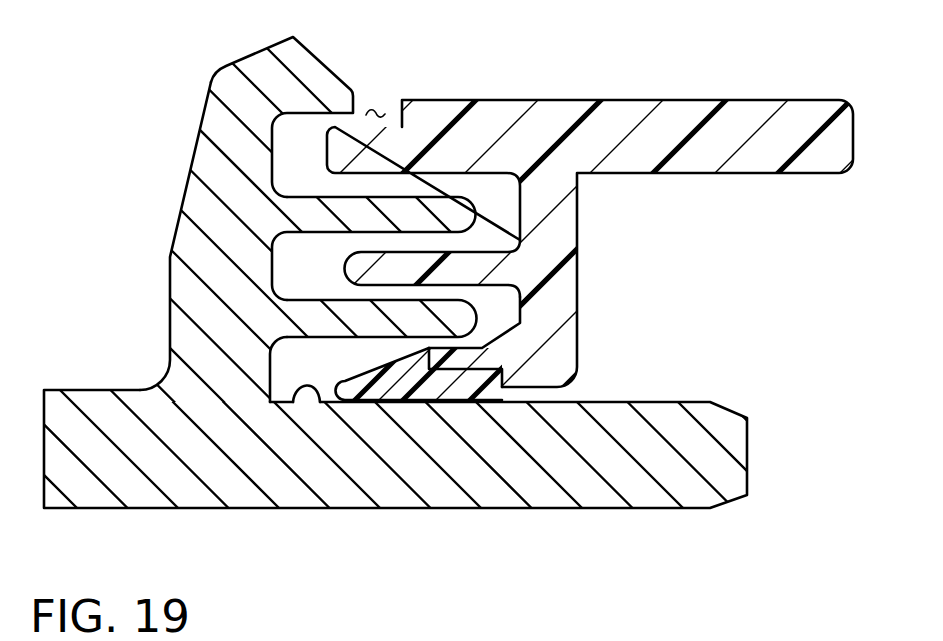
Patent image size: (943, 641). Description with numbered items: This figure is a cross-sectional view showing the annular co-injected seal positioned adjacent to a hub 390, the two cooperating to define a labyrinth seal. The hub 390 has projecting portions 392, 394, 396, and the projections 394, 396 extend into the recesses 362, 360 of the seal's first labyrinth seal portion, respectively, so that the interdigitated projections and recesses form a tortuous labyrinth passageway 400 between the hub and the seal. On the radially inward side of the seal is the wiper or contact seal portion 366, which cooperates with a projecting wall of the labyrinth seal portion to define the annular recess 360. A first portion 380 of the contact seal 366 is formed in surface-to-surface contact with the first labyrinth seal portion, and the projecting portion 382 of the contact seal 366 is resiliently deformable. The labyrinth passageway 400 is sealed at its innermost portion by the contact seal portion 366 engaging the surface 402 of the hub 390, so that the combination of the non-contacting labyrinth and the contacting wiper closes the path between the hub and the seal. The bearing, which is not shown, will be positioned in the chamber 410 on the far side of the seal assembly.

The annular recess 360 is at (510, 312).
The recess 362 is at (507, 220).
The contact seal portion 366 is at (493, 400).
The first portion of the contact seal 380 is at (464, 375).
The projecting portion of the contact seal 382 is at (402, 383).
The hub 390 is at (168, 222).
The projecting portion 392 is at (331, 67).
The projecting portion 394 is at (342, 204).
The projecting portion 396 is at (334, 326).
The labyrinth passageway 400 is at (383, 108).
The surface of the hub 402 is at (297, 405).
The chamber 410 is at (798, 288).